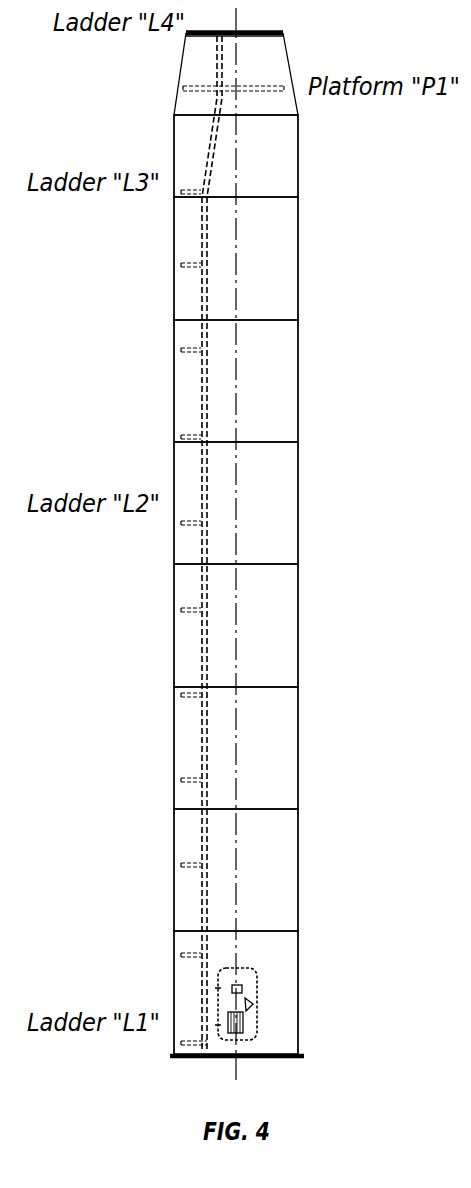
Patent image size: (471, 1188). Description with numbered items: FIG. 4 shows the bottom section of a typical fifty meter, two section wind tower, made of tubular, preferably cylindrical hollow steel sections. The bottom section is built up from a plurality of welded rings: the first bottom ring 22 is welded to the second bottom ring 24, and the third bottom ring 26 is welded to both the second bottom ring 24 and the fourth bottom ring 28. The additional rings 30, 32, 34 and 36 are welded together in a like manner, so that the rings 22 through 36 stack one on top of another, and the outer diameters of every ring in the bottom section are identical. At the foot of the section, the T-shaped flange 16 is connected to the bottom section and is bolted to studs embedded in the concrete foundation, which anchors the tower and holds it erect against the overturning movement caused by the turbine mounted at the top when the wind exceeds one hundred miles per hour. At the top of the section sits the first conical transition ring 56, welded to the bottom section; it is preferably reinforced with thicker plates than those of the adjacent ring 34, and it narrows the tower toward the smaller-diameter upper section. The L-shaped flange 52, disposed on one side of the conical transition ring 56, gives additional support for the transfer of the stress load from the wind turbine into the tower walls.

The T-shaped flange 16 is at (272, 1058).
The first bottom ring 22 is at (298, 994).
The second bottom ring 24 is at (298, 871).
The third bottom ring 26 is at (298, 748).
The fourth bottom ring 28 is at (298, 626).
The additional ring 30 is at (298, 504).
The additional ring 32 is at (298, 381).
The additional ring 34 is at (298, 258).
The additional ring 36 is at (298, 155).
The L-shaped flange 52 is at (262, 32).
The first conical transition ring 56 is at (180, 73).